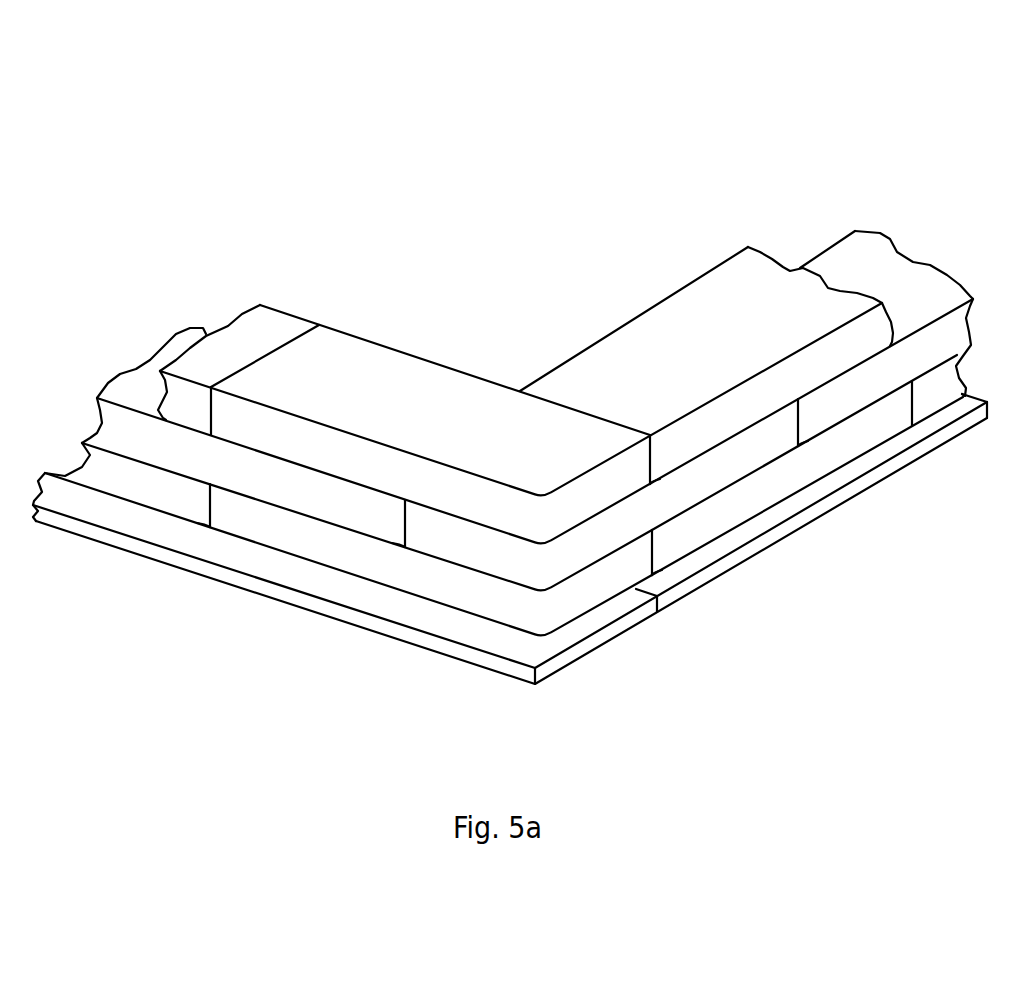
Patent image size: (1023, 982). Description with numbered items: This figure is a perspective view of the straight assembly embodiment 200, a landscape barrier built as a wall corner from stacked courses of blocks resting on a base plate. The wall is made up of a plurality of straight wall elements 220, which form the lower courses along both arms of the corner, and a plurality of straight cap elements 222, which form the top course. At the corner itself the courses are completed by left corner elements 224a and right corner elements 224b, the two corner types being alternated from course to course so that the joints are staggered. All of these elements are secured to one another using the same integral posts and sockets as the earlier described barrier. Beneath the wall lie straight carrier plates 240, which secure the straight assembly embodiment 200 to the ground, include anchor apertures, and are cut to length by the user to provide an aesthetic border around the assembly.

The straight assembly embodiment 200 is at (553, 175).
The straight wall elements 220 is at (235, 465).
The straight cap elements 222 is at (278, 318).
The left corner elements 224a is at (367, 467).
The right corner elements 224b is at (607, 540).
The straight carrier plates 240 is at (405, 608).